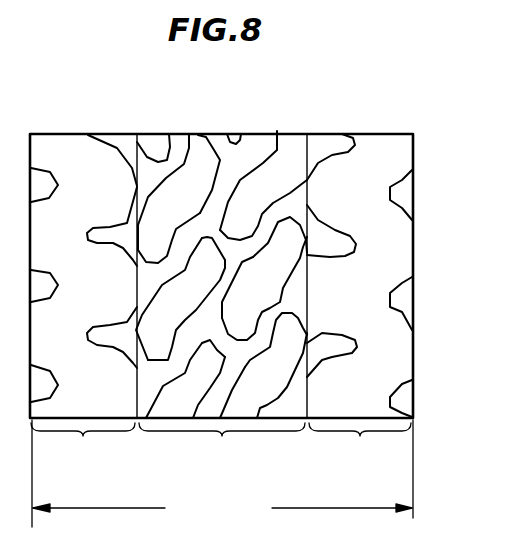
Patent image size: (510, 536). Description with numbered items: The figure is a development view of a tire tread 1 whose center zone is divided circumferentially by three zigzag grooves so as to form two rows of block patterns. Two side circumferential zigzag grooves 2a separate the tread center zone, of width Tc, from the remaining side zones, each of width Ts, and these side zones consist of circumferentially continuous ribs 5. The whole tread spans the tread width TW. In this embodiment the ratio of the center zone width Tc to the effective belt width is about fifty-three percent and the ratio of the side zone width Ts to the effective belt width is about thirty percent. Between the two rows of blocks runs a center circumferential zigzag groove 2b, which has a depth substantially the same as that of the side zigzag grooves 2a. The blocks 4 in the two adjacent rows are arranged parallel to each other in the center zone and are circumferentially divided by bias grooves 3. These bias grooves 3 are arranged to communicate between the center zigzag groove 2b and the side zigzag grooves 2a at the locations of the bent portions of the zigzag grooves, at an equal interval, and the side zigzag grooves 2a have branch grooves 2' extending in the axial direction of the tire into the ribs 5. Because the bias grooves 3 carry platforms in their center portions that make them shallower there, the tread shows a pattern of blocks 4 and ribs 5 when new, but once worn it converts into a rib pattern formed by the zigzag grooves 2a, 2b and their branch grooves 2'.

The tread 1 is at (396, 159).
The circumferential zigzag grooves 2a is at (142, 157).
The circumferential zigzag groove 2b is at (228, 134).
The branch grooves 2' is at (238, 237).
The bias grooves 3 is at (191, 150).
The blocks 4 is at (158, 230).
The ribs 5 is at (75, 290).
The side zone width Ts is at (221, 444).
The center zone width Tc is at (222, 444).
The tread width TW is at (222, 473).